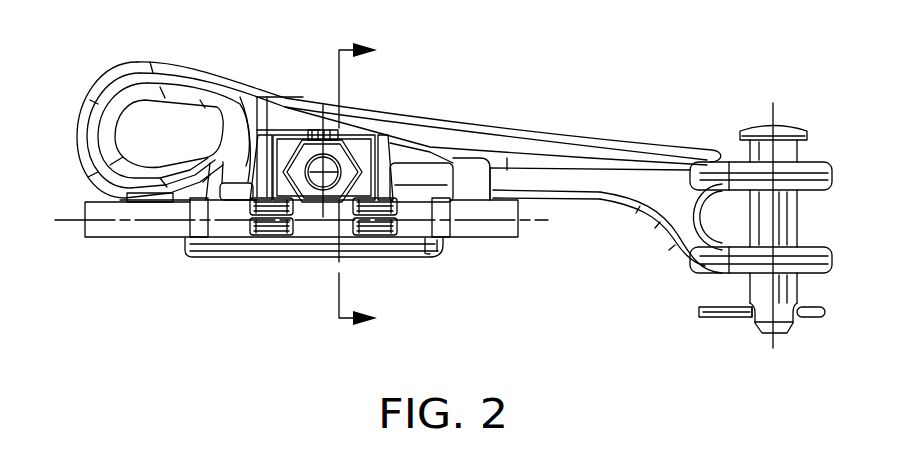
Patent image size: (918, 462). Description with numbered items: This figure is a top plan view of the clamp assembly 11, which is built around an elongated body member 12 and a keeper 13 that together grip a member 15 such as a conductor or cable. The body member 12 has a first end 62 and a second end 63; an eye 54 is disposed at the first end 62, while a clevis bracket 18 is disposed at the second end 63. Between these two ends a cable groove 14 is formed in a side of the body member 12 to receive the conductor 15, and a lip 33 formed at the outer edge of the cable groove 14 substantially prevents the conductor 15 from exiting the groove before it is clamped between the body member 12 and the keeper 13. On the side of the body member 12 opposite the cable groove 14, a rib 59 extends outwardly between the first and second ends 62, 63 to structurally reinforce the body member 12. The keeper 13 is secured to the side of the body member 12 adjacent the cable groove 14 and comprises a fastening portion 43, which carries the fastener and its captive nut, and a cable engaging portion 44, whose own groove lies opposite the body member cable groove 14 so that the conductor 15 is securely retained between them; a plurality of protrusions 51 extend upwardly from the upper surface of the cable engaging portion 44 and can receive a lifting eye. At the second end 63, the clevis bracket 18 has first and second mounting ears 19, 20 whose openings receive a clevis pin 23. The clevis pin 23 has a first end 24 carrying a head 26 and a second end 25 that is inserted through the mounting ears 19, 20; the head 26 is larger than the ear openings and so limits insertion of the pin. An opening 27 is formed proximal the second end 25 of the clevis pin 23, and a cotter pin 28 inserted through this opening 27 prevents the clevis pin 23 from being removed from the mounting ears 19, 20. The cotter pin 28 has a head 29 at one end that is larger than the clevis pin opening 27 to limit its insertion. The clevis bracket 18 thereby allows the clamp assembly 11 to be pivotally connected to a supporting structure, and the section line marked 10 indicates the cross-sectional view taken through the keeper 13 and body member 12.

The section line 10 is at (370, 185).
The clamp assembly 11 is at (504, 89).
The body member 12 is at (546, 118).
The keeper 13 is at (455, 222).
The cable groove 14 is at (185, 238).
The conductor 15 is at (112, 237).
The clevis bracket 18 is at (666, 266).
The first mounting ear 19 is at (829, 177).
The second mounting ear 20 is at (829, 267).
The clevis pin 23 is at (797, 227).
The first end of clevis pin 24 is at (755, 122).
The second end of clevis pin 25 is at (782, 335).
The head 26 is at (797, 123).
The opening 27 is at (752, 312).
The cotter pin 28 is at (714, 320).
The head of cotter pin 29 is at (824, 313).
The lip 33 is at (213, 255).
The fastening portion 43 is at (293, 130).
The cable engaging portion 44 is at (435, 256).
The protrusions 51 is at (250, 222).
The eye 54 is at (113, 127).
The rib 59 is at (462, 122).
The first end 62 is at (78, 126).
The second end 63 is at (812, 157).